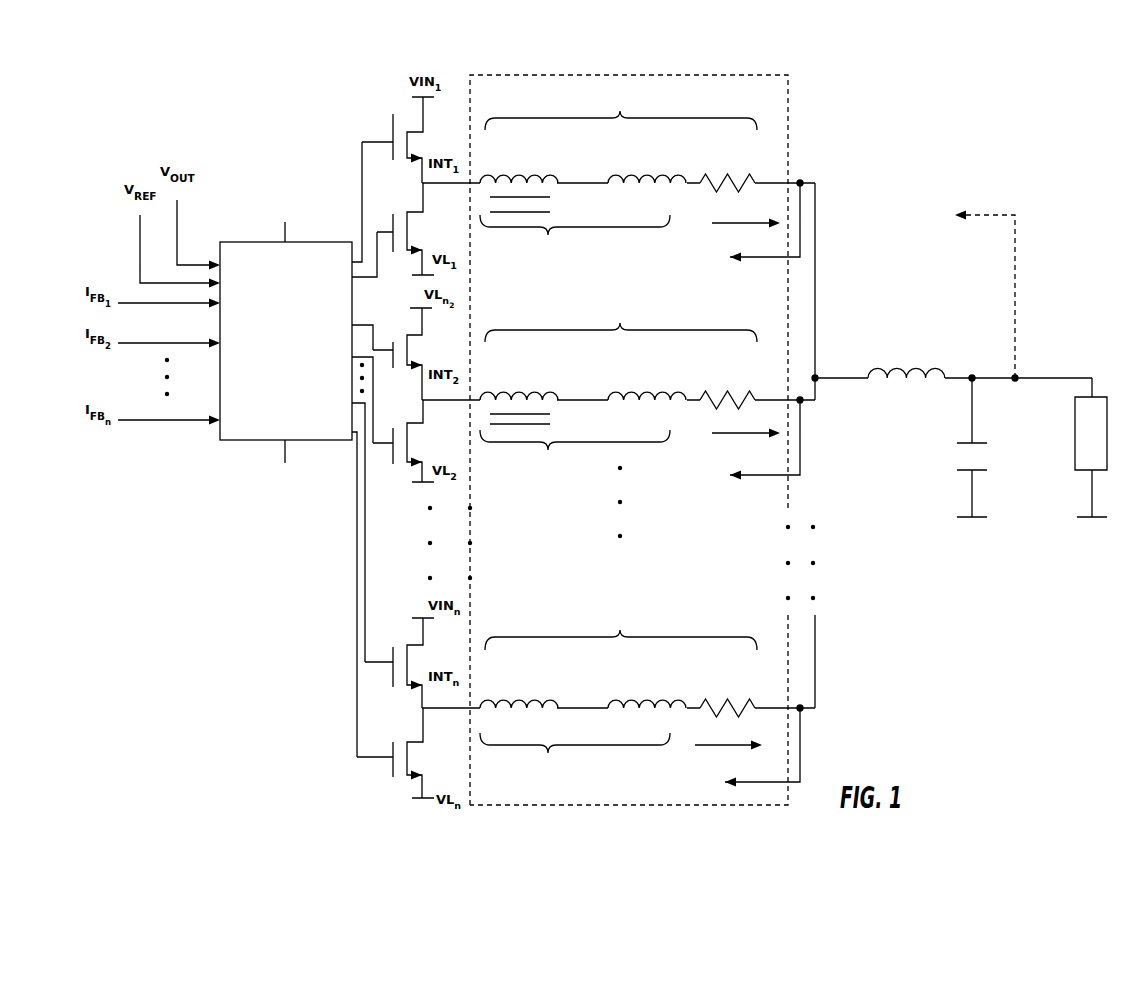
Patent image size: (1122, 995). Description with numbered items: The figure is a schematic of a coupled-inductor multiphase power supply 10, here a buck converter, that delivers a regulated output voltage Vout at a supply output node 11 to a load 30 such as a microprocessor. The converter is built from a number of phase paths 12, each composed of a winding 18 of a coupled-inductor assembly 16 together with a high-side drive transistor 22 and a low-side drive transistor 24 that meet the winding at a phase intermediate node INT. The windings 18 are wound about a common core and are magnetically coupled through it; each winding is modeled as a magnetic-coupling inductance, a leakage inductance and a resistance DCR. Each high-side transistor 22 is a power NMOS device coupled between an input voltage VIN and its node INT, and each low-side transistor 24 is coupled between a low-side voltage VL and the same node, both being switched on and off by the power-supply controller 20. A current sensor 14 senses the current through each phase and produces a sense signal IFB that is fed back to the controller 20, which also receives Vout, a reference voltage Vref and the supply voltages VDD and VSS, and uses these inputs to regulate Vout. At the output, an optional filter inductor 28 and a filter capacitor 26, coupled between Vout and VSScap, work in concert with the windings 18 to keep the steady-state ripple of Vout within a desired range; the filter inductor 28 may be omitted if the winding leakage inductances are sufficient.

The coupled-inductor multiphase power supply 10 is at (938, 170).
The supply output node 11 is at (1016, 376).
The phase path 12 is at (478, 442).
The current sensor 14 is at (803, 186).
The coupled-inductor assembly 16 is at (783, 75).
The winding 18 is at (618, 437).
The power-supply controller 20 is at (218, 440).
The high-side drive transistor 22 is at (391, 136).
The low-side drive transistor 24 is at (411, 208).
The filter capacitor 26 is at (982, 441).
The filter inductor 28 is at (920, 365).
The load 30 is at (1074, 440).